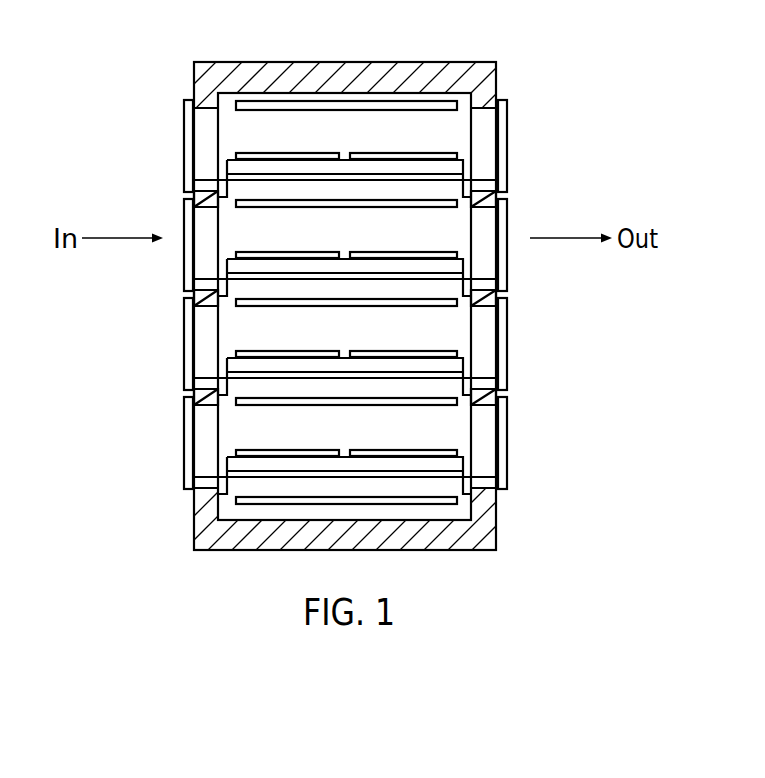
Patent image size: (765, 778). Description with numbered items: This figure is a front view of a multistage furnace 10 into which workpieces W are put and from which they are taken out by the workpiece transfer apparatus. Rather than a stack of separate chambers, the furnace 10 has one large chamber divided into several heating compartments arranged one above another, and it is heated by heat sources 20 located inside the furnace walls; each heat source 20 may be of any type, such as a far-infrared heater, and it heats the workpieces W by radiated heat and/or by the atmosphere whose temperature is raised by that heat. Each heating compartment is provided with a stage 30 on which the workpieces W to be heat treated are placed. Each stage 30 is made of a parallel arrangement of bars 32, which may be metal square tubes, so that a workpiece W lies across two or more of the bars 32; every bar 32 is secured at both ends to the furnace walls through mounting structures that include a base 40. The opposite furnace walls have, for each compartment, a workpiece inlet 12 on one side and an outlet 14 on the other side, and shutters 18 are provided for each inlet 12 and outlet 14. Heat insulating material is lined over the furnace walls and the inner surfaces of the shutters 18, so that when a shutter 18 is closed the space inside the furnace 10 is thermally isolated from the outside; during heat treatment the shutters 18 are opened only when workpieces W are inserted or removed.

The furnace 10 is at (503, 45).
The workpiece inlet 12 is at (228, 340).
The outlet 14 is at (462, 340).
The shutters 18 is at (180, 212).
The heat source 20 is at (267, 203).
The stage 30 is at (326, 238).
The bars 32 is at (237, 267).
The base 40 is at (234, 285).
The workpieces W is at (268, 252).